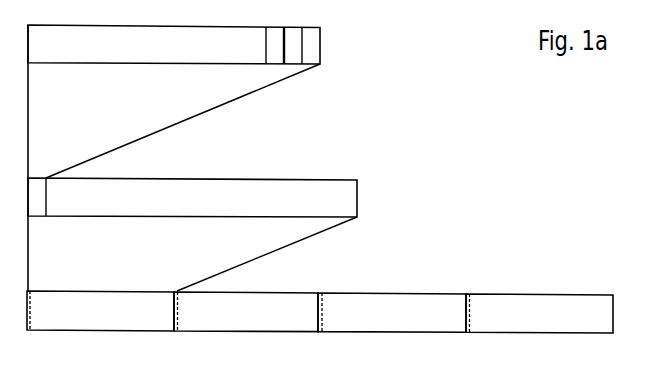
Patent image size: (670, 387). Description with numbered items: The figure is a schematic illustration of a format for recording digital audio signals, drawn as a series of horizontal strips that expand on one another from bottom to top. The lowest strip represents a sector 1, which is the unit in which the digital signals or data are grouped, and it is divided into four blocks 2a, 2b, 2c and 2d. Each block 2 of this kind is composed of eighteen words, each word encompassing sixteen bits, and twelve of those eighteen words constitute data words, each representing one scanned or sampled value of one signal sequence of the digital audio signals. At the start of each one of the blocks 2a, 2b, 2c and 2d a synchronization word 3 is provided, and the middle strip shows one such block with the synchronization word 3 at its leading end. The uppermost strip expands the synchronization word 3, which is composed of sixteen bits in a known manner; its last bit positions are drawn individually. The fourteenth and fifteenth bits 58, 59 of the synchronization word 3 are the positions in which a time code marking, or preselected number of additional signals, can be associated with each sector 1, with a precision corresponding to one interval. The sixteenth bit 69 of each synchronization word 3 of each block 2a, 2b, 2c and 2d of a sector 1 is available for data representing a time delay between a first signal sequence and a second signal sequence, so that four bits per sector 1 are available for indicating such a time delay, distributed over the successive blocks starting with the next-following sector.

The sector 1 is at (440, 270).
The block 2 is at (315, 187).
The block 2a is at (102, 327).
The block 2b is at (252, 327).
The block 2c is at (398, 328).
The block 2d is at (543, 328).
The synchronization word 3 is at (320, 41).
The fourteenth bit 58 is at (275, 62).
The fifteenth bit 59 is at (295, 62).
The sixteenth bit 69 is at (315, 60).